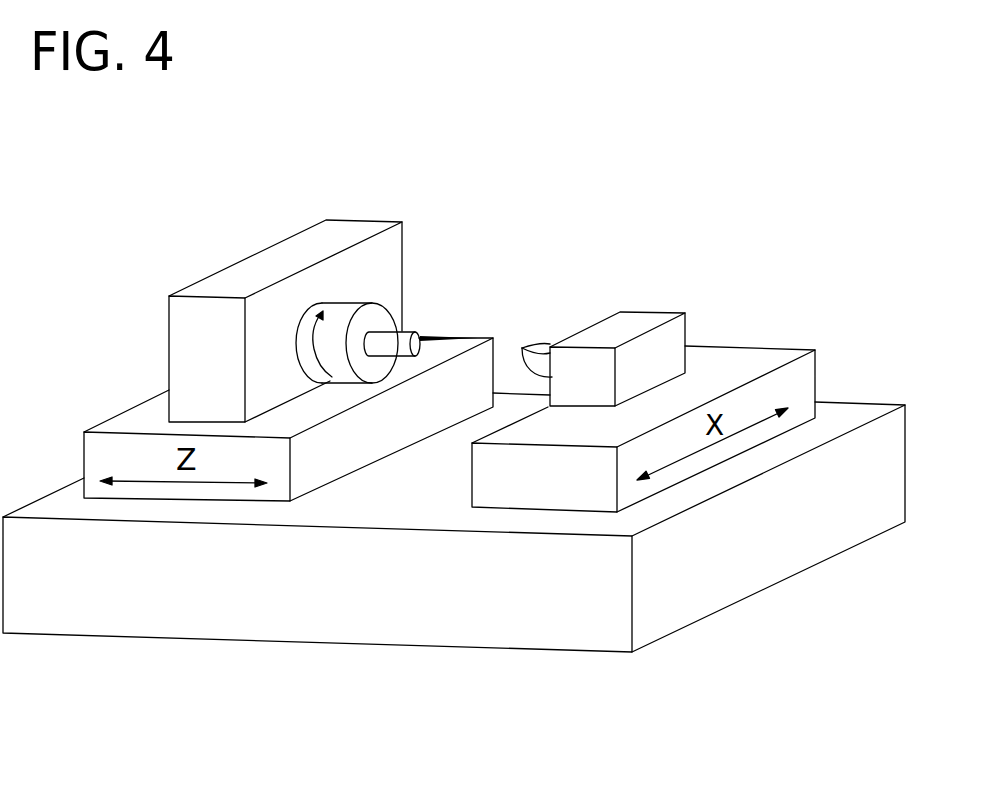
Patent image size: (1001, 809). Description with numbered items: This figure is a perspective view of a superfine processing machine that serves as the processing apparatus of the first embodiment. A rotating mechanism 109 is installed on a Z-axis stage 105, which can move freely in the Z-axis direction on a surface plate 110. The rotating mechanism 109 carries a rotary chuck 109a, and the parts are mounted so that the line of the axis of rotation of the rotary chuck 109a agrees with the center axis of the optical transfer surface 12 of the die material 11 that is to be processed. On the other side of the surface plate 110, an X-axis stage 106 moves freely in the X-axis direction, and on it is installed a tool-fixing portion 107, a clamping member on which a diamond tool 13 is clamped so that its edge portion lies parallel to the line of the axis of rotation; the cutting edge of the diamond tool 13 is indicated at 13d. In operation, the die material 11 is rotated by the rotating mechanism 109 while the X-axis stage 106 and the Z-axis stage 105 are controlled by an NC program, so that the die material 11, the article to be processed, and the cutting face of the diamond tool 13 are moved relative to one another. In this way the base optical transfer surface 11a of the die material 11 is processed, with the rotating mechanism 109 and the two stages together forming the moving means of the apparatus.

The die material 11 is at (438, 282).
The base optical transfer surface 11a is at (416, 333).
The optical transfer surface 12 is at (440, 347).
The diamond tool 13 is at (553, 311).
The cutting edge 13d is at (542, 352).
The Z-axis stage 105 is at (315, 460).
The X-axis stage 106 is at (553, 495).
The tool-fixing portion 107 is at (657, 311).
The rotating mechanism 109 is at (363, 220).
The rotary chuck 109a is at (338, 303).
The surface plate 110 is at (718, 577).